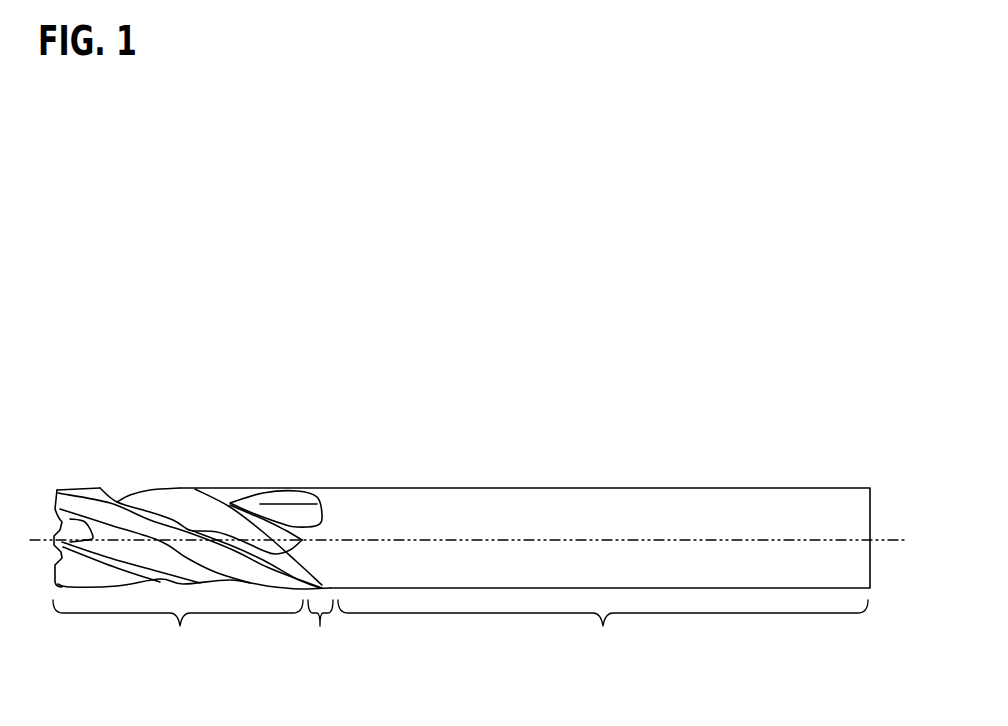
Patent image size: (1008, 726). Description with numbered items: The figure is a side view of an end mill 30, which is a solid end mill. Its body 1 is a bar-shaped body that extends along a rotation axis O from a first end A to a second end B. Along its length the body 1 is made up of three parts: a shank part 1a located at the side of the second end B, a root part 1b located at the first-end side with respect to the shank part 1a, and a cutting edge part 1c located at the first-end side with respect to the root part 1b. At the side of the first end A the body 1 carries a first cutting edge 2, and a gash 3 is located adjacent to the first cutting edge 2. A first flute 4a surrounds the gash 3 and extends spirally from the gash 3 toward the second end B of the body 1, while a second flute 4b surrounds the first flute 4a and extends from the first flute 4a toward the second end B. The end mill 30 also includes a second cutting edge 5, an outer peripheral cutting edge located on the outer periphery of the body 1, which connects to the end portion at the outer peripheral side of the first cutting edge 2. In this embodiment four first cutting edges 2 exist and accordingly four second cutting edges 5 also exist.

The end mill 30 is at (745, 388).
The body 1 is at (772, 485).
The shank part 1a is at (603, 635).
The root part 1b is at (318, 635).
The cutting edge part 1c is at (178, 635).
The first cutting edge 2 is at (53, 557).
The gash 3 is at (63, 490).
The first flute 4a is at (155, 500).
The second flute 4b is at (228, 506).
The second cutting edge 5 is at (97, 490).
The rotation axis O is at (474, 557).
The first end A is at (22, 498).
The second end B is at (908, 499).